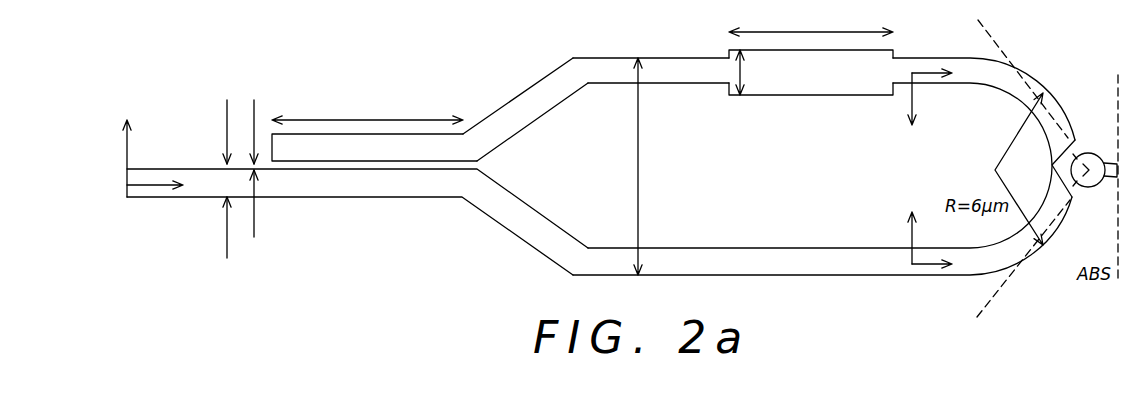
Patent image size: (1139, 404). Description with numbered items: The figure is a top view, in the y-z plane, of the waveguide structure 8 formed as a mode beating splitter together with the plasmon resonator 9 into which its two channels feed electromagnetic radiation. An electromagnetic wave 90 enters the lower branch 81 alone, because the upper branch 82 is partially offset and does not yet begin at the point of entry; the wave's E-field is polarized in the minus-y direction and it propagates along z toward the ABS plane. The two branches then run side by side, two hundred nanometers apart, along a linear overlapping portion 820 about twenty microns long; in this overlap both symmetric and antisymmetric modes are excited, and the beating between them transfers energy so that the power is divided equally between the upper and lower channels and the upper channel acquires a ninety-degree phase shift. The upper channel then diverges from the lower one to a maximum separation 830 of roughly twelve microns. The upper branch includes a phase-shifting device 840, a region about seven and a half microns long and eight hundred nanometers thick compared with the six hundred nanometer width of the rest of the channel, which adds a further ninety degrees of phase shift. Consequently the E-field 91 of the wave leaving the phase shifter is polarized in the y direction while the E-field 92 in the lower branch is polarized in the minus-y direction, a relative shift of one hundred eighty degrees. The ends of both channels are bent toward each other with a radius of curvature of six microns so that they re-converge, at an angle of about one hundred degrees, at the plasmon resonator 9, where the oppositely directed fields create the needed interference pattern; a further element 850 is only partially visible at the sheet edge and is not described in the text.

The waveguide structure 8 is at (481, 80).
The lower branch 81 is at (543, 232).
The upper branch 82 is at (553, 83).
The overlapping portion 820 is at (303, 148).
The maximum separation 830 is at (635, 127).
The phase-shifting device 840 is at (810, 85).
The plasmon resonator 9 is at (1096, 150).
The electromagnetic wave 90 is at (146, 108).
The E-field of wave leaving the phase shifter 91 is at (902, 104).
The E-field in the lower branch 92 is at (898, 237).
The reference element (partially shown) 850 is at (859, 400).